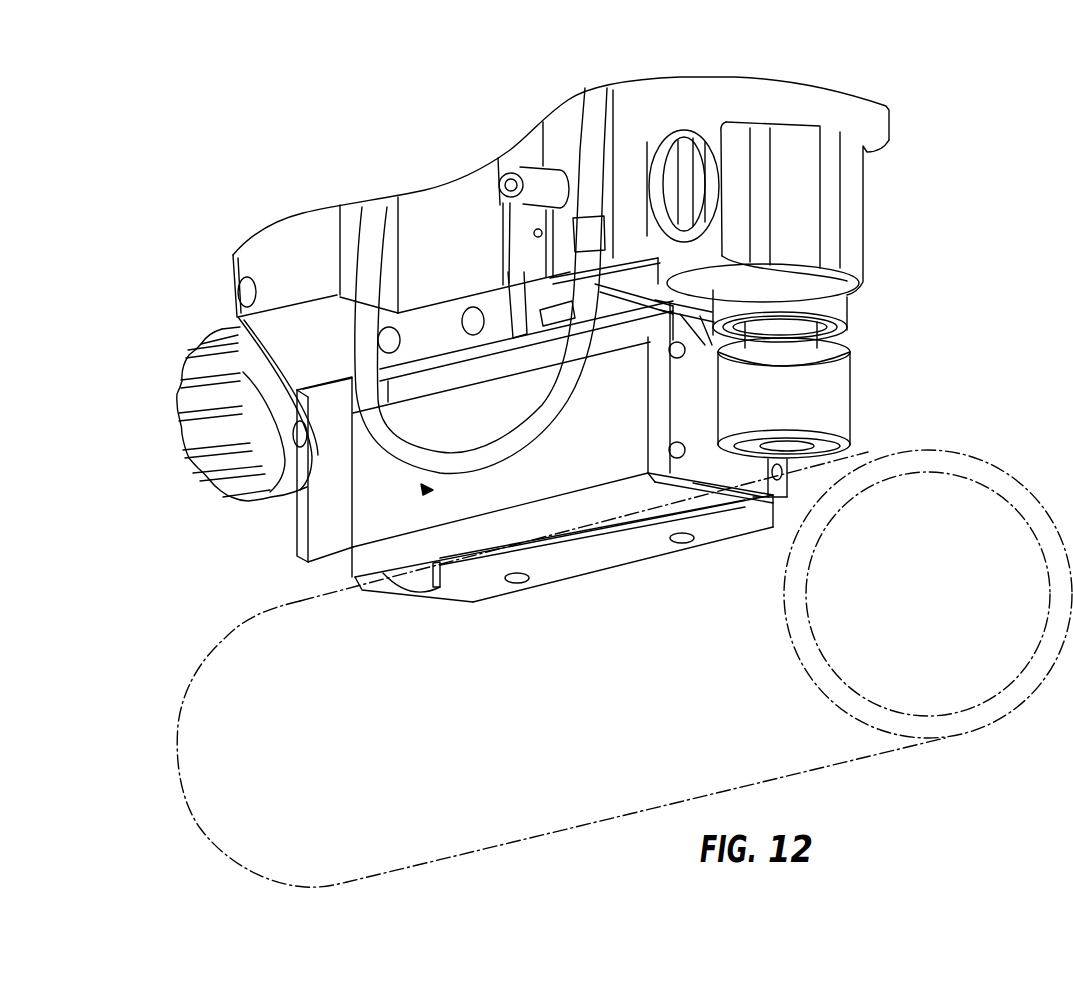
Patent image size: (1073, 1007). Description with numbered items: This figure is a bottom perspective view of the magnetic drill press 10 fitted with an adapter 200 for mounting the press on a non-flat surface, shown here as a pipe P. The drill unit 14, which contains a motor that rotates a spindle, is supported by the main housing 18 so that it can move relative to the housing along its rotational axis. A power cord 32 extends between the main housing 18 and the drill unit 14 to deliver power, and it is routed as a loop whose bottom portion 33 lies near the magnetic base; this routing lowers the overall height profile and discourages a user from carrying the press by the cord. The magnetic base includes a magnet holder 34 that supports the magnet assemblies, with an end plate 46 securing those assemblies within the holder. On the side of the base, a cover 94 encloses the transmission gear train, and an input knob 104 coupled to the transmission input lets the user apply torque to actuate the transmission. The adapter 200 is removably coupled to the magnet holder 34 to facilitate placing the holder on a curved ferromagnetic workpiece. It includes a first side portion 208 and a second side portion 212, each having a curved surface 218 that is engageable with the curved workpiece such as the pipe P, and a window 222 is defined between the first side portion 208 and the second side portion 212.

The magnetic drill press 10 is at (970, 110).
The drill unit 14 is at (831, 116).
The main housing 18 is at (457, 212).
The power cord 32 is at (365, 257).
The bottom portion 33 is at (427, 490).
The magnet holder 34 is at (385, 478).
The end plate 46 is at (775, 476).
The cover 94 is at (330, 528).
The input knob 104 is at (205, 345).
The adapter 200 is at (373, 569).
The first side portion 208 is at (373, 589).
The second side portion 212 is at (547, 587).
The curved surface 218 is at (553, 533).
The window 222 is at (463, 574).
The pipe P is at (999, 455).